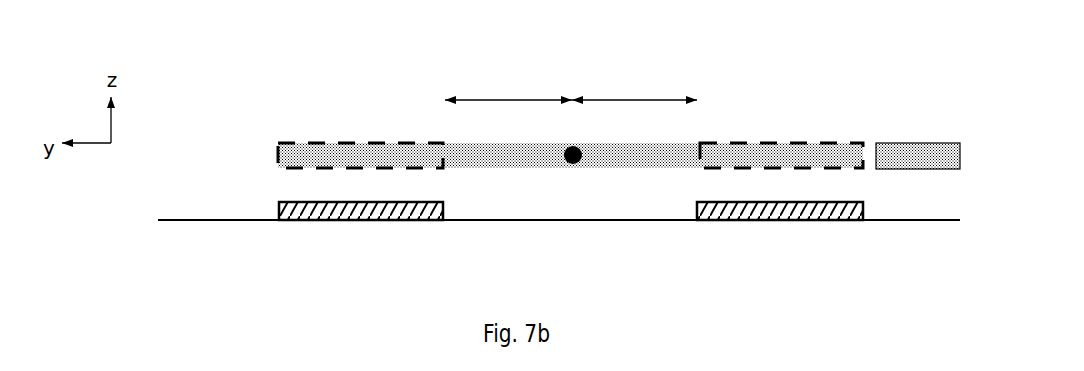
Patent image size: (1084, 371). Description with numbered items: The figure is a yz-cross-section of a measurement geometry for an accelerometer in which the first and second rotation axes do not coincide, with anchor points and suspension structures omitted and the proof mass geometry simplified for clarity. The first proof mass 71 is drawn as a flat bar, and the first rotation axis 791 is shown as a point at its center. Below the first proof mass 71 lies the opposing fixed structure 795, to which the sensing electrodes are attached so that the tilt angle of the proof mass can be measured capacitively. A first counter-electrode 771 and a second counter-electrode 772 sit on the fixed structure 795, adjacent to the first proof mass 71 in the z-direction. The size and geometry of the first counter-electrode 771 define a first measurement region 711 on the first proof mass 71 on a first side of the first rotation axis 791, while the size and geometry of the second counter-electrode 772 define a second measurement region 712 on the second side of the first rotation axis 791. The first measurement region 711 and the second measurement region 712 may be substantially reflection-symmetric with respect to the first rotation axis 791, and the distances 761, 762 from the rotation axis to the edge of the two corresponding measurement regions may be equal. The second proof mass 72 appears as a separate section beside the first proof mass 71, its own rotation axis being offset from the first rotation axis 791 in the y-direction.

The first proof mass 71 is at (293, 117).
The first measurement region 711 is at (372, 158).
The second measurement region 712 is at (760, 162).
The second proof mass 72 is at (917, 132).
The distance 761 is at (508, 85).
The distance 762 is at (634, 85).
The first counter-electrode 771 is at (405, 225).
The second counter-electrode 772 is at (762, 225).
The first rotation axis 791 is at (568, 170).
The fixed structure 795 is at (212, 219).